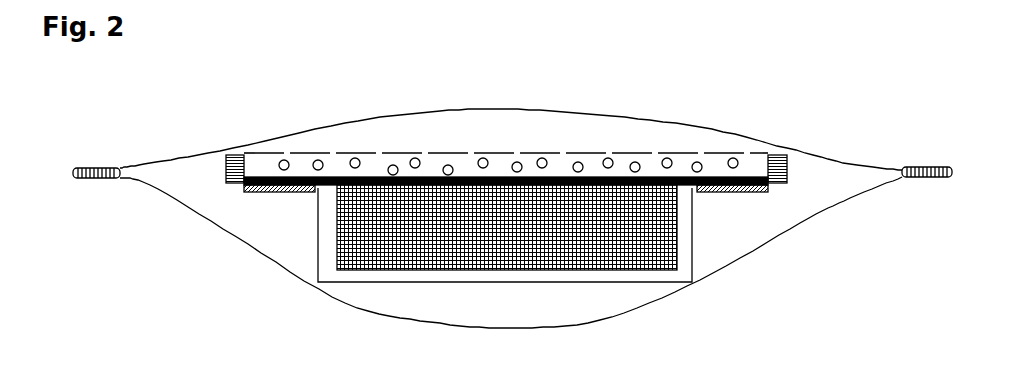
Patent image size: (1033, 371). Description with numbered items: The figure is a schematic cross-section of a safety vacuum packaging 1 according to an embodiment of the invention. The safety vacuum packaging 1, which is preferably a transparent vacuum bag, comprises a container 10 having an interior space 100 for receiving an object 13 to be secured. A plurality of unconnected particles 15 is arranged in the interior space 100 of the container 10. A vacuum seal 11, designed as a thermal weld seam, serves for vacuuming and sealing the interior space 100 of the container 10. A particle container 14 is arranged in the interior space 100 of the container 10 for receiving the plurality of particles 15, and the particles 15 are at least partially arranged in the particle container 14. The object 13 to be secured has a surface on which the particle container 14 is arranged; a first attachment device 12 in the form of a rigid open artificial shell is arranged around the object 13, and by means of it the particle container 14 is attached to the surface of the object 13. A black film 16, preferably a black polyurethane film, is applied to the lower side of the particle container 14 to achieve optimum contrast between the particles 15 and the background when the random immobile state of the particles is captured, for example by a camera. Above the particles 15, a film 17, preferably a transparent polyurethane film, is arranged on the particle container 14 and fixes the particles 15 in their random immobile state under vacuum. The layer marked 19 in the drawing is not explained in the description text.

The safety vacuum packaging 1 is at (377, 83).
The interior space 100 is at (812, 178).
The container 10 is at (235, 237).
The vacuum seal 11 is at (73, 173).
The first attachment device 12 is at (682, 222).
The object to be secured 13 is at (452, 232).
The particle container 14 is at (430, 163).
The particles 15 is at (488, 160).
The black film 16 is at (553, 180).
The film 17 is at (648, 152).
The adhesive layer 19 is at (760, 192).